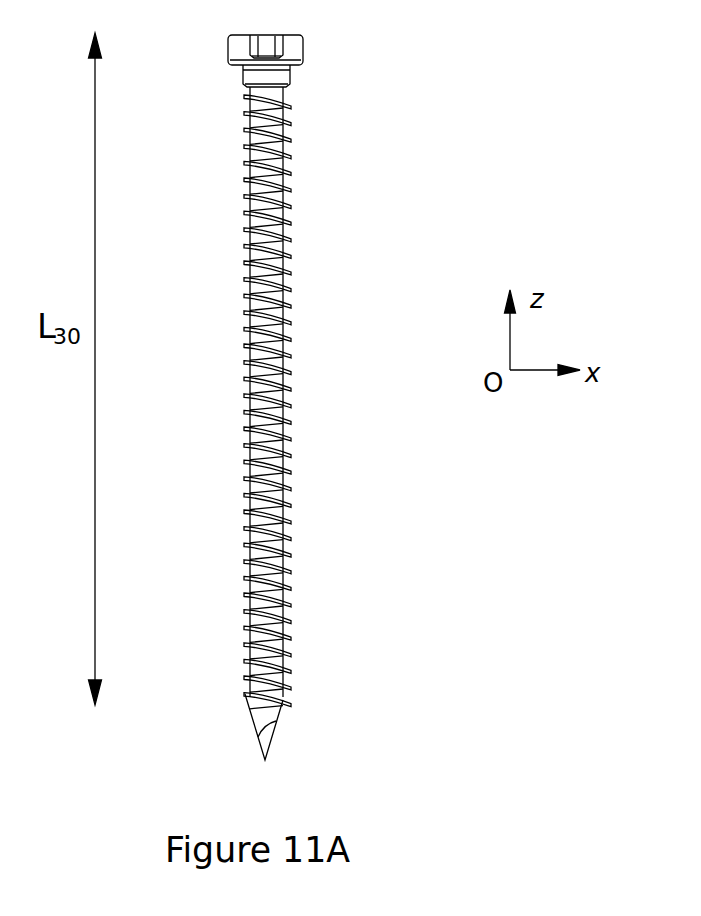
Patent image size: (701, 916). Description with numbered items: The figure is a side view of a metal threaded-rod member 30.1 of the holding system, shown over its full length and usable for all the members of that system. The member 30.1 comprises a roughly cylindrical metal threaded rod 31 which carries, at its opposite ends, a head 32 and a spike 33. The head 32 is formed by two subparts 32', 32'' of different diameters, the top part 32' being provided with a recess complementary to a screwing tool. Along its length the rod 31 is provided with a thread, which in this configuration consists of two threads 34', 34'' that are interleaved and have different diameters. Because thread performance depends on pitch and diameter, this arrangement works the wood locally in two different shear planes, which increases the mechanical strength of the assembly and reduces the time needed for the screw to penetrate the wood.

The metal threaded-rod member 30.1 is at (298, 204).
The metal threaded rod 31 is at (275, 336).
The head 32 is at (312, 48).
The top part 32' is at (204, 44).
The subpart of head 32'' is at (207, 77).
The spike 33 is at (265, 717).
The thread 34' is at (324, 440).
The thread 34'' is at (328, 584).